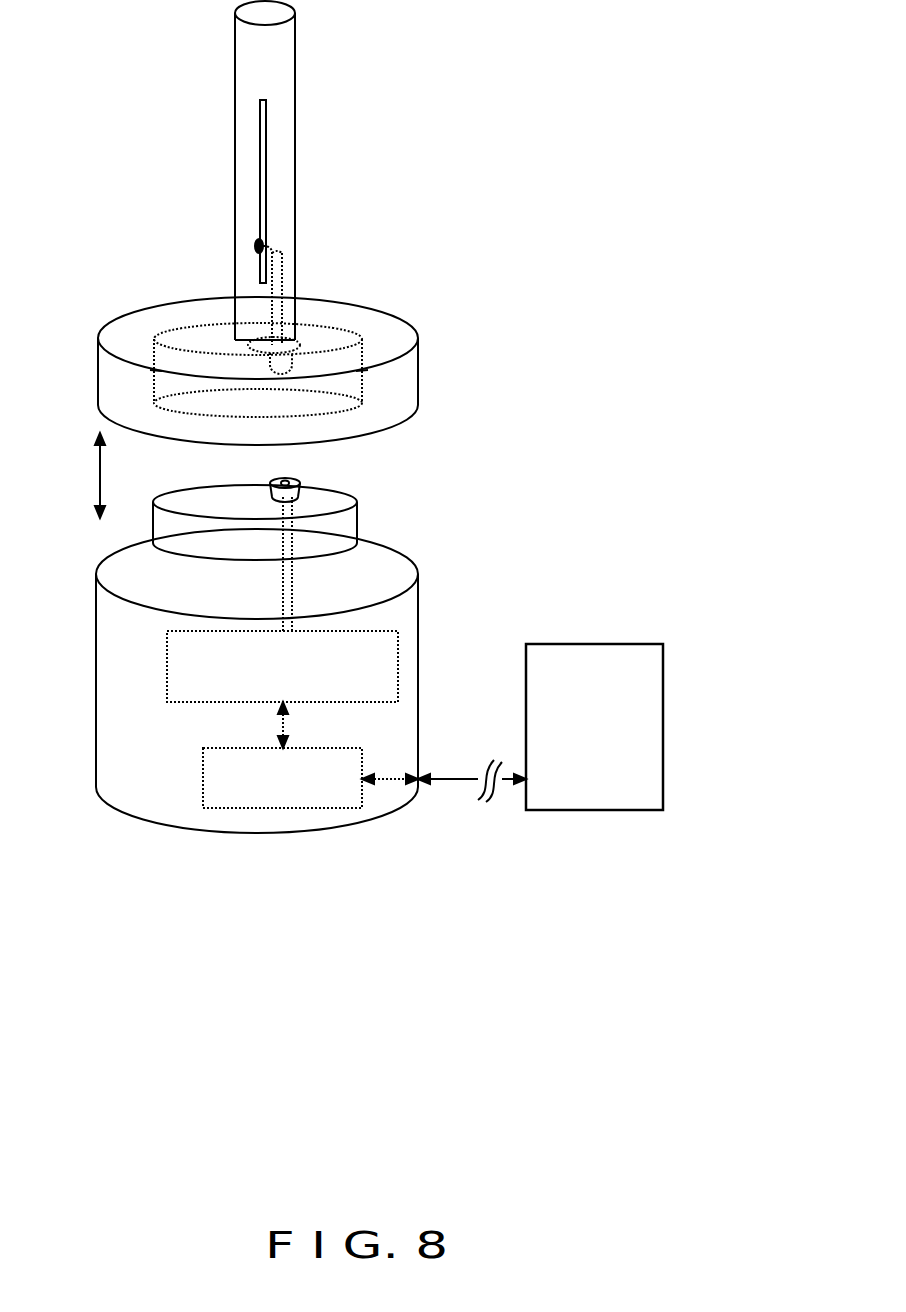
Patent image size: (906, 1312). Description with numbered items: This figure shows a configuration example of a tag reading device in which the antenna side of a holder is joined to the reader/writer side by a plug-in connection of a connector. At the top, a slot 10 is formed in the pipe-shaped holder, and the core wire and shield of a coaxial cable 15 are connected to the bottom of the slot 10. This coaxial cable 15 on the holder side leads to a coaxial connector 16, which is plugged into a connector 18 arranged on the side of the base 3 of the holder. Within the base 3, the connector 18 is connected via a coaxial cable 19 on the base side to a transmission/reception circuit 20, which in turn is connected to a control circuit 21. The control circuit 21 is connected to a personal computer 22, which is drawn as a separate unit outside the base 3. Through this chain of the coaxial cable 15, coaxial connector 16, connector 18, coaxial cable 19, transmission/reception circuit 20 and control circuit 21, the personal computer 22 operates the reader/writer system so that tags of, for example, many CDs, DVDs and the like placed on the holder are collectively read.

The base 3 is at (95, 677).
The slot 10 is at (279, 156).
The coaxial cable 15 is at (392, 183).
The coaxial connector 16 is at (272, 352).
The connector 18 is at (435, 412).
The coaxial cable 19 is at (283, 548).
The transmission/reception circuit 20 is at (167, 668).
The control circuit 21 is at (203, 780).
The personal computer 22 is at (594, 644).